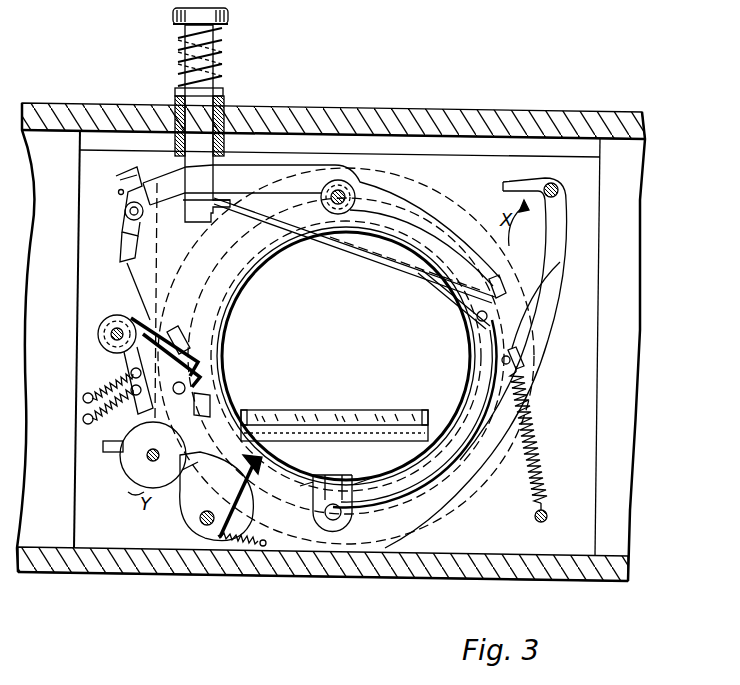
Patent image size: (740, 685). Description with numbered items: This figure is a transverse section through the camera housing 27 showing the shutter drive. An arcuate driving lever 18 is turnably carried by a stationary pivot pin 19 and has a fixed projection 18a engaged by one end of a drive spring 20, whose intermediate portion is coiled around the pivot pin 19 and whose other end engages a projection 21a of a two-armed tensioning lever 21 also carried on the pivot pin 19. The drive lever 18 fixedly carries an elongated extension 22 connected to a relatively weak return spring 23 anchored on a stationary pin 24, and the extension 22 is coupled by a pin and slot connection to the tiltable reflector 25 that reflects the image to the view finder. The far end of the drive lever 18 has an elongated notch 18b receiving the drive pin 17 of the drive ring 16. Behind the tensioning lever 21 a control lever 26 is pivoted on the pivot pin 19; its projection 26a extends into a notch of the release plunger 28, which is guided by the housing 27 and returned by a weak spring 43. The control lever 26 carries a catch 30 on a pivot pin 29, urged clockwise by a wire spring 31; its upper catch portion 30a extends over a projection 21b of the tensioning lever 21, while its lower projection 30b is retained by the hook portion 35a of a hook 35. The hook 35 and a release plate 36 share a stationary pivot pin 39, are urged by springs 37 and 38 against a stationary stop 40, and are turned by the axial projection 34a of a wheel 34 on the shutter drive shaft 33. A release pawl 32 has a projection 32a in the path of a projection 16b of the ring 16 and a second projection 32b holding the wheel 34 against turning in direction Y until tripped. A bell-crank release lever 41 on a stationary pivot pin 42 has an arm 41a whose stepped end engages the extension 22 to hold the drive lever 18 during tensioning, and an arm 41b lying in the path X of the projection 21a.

The drive ring 16 is at (246, 411).
The projection 16b is at (210, 400).
The drive pin 17 is at (336, 522).
The arcuate driving lever 18 is at (433, 478).
The projection 18a is at (470, 314).
The elongated notch 18b is at (334, 480).
The stationary pivot pin 19 is at (340, 190).
The drive spring 20 is at (440, 272).
The tensioning lever 21 is at (285, 178).
The projection 21a is at (555, 268).
The projection 21b is at (146, 225).
The elongated extension 22 is at (523, 360).
The return spring 23 is at (536, 440).
The stationary pin 24 is at (548, 517).
The tiltable reflector 25 is at (365, 412).
The control lever 26 is at (176, 172).
The projection 26a is at (224, 208).
The camera housing 27 is at (232, 115).
The release plunger 28 is at (215, 56).
The pivot pin 29 is at (125, 211).
The catch 30 is at (125, 180).
The catch portion 30a is at (127, 178).
The projection 30b is at (121, 243).
The wire spring 31 is at (118, 193).
The release pawl 32 is at (215, 528).
The projection 32a is at (249, 488).
The second projection 32b is at (198, 464).
The shaft 33 is at (150, 461).
The wheel 34 is at (103, 441).
The axial projection 34a is at (113, 453).
The hook 35 is at (200, 365).
The hook portion 35a is at (174, 326).
The release plate 36 is at (130, 362).
The spring 37 is at (85, 416).
The spring 38 is at (86, 394).
The stationary pivot pin 39 is at (108, 330).
The stop 40 is at (200, 380).
The release lever 41 is at (557, 213).
The arm 41a is at (538, 316).
The arm 41b is at (505, 186).
The stationary pivot pin 42 is at (556, 186).
The spring 43 is at (178, 52).